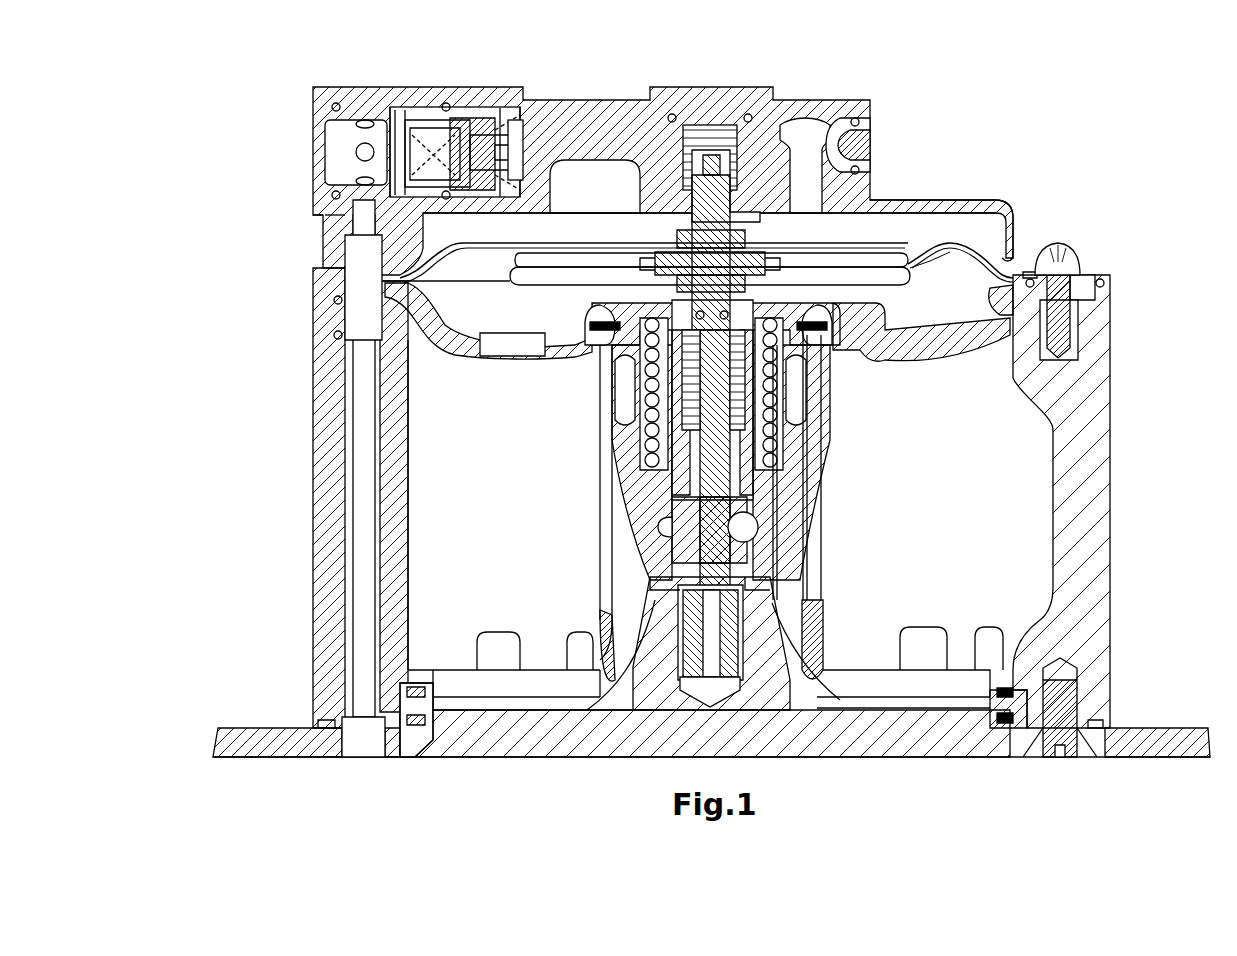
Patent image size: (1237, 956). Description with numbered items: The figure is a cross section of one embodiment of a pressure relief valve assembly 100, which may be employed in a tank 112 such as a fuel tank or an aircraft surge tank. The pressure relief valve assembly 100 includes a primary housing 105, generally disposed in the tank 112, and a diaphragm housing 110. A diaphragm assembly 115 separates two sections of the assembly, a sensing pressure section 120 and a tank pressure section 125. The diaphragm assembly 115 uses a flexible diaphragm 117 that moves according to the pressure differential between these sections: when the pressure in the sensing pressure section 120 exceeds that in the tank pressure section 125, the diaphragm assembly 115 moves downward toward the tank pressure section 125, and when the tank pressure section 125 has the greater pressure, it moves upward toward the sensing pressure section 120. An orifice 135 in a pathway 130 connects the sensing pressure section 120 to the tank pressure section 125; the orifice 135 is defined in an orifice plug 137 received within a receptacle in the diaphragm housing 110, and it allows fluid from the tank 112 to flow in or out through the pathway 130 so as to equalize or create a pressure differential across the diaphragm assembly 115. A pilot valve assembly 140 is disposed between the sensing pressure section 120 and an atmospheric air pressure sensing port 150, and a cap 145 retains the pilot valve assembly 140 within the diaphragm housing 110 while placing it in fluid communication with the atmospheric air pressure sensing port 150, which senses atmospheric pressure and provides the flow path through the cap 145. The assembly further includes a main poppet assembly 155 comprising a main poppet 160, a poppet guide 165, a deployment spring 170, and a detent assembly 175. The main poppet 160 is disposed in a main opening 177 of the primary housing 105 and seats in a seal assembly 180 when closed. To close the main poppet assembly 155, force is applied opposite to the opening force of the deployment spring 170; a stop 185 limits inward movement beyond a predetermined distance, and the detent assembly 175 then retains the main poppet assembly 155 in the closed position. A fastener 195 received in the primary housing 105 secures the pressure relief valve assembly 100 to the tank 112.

The pressure relief valve assembly 100 is at (1050, 106).
The primary housing 105 is at (1107, 300).
The diaphragm housing 110 is at (1005, 212).
The tank 112 is at (1166, 742).
The diaphragm assembly 115 is at (1003, 247).
The diaphragm 117 is at (962, 245).
The sensing pressure section 120 is at (910, 228).
The tank pressure section 125 is at (956, 340).
The pathway 130 is at (805, 168).
The orifice 135 is at (878, 145).
The orifice plug 137 is at (862, 135).
The pilot valve assembly 140 is at (487, 98).
The cap 145 is at (313, 140).
The atmospheric air pressure sensing port 150 is at (362, 210).
The main poppet assembly 155 is at (775, 610).
The main poppet 160 is at (562, 748).
The poppet guide 165 is at (785, 540).
The deployment spring 170 is at (640, 395).
The detent assembly 175 is at (715, 455).
The main opening 177 is at (440, 690).
The seal assembly 180 is at (404, 735).
The stop 185 is at (592, 322).
The fastener 195 is at (1060, 730).